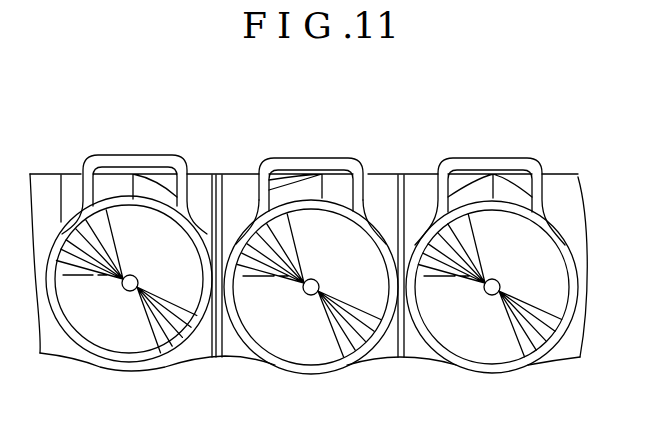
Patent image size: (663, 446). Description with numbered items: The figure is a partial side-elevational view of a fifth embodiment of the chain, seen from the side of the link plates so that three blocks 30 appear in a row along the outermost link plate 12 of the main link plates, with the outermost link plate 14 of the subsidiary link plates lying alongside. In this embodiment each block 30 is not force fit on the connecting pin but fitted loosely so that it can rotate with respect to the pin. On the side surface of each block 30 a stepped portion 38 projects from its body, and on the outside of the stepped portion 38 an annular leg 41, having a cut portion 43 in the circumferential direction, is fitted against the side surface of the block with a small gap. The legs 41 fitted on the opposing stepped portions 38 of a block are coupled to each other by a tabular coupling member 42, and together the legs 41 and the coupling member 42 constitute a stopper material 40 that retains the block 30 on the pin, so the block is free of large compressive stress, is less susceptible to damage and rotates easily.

The outermost link plate 12 is at (132, 152).
The outermost link plate 14 is at (216, 175).
The block 30 is at (492, 269).
The stepped portion 38 is at (492, 248).
The stopper material 40 is at (332, 252).
The annular leg 41 is at (311, 308).
The coupling member 42 is at (311, 165).
The cut portion 43 is at (311, 312).